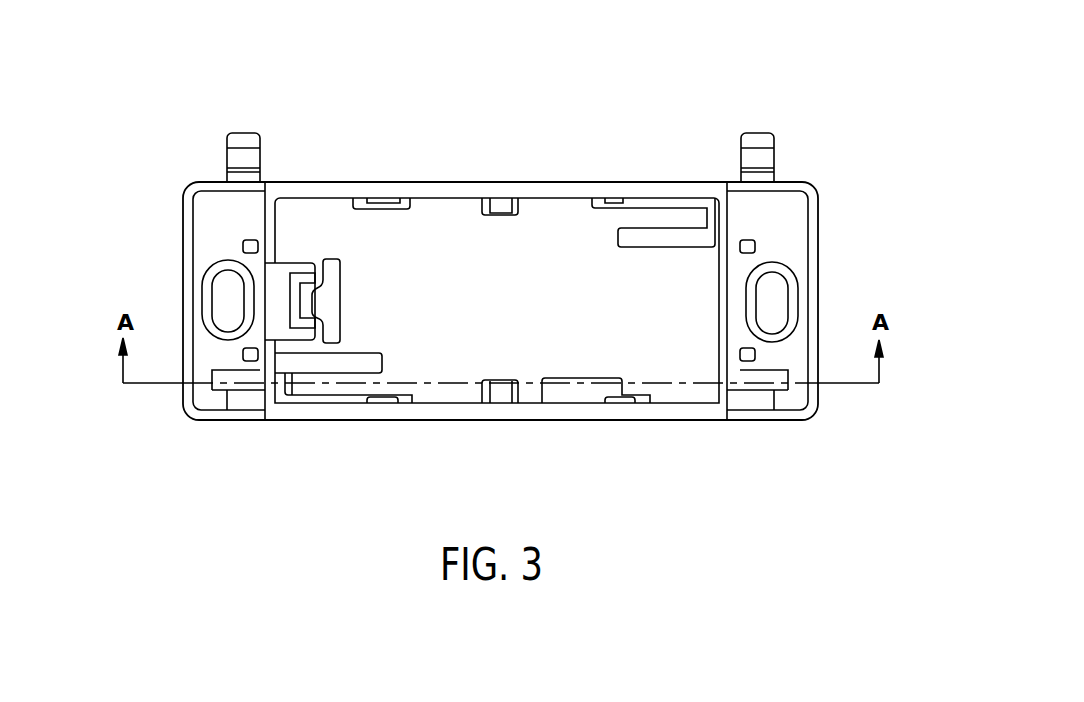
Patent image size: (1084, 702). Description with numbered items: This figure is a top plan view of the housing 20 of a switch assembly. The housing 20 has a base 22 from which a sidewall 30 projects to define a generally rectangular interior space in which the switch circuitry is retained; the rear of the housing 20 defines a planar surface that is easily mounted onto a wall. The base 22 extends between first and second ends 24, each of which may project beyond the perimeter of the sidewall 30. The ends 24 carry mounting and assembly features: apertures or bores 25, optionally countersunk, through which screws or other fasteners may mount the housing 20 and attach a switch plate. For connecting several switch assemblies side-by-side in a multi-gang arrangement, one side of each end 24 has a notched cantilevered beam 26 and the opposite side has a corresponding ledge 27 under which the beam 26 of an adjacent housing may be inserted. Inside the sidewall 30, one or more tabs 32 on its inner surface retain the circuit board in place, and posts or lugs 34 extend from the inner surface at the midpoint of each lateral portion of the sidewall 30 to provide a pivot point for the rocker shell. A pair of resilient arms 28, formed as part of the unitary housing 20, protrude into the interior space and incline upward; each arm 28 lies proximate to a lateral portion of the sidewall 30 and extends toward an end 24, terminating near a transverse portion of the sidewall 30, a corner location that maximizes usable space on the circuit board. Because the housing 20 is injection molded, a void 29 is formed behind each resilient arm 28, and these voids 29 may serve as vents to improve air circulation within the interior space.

The housing 20 is at (182, 108).
The base 22 is at (514, 307).
The first and second ends 24 is at (807, 250).
The apertures or bores 25 is at (218, 313).
The notched cantilevered beam 26 is at (253, 140).
The ledge 27 is at (227, 377).
The resilient arms 28 is at (668, 218).
The void 29 is at (573, 397).
The sidewall 30 is at (432, 187).
The tabs 32 is at (383, 200).
The posts or lugs 34 is at (507, 197).